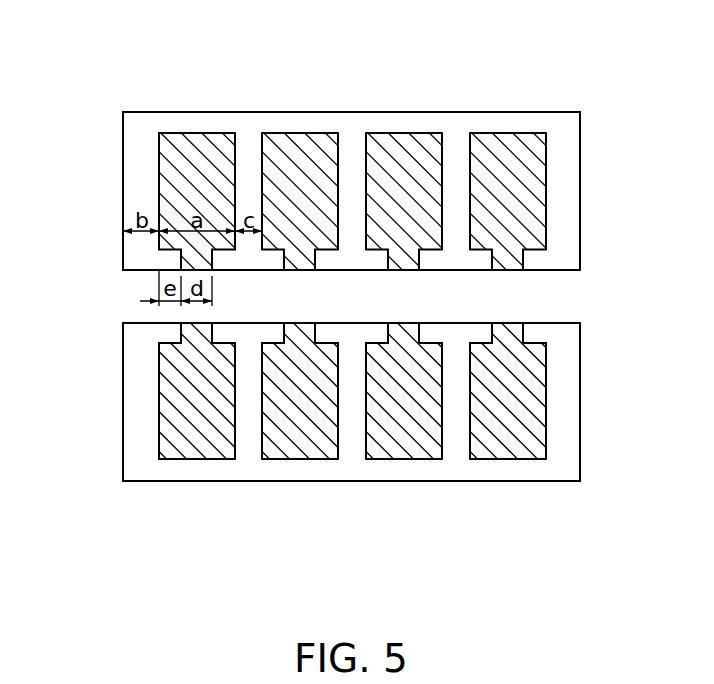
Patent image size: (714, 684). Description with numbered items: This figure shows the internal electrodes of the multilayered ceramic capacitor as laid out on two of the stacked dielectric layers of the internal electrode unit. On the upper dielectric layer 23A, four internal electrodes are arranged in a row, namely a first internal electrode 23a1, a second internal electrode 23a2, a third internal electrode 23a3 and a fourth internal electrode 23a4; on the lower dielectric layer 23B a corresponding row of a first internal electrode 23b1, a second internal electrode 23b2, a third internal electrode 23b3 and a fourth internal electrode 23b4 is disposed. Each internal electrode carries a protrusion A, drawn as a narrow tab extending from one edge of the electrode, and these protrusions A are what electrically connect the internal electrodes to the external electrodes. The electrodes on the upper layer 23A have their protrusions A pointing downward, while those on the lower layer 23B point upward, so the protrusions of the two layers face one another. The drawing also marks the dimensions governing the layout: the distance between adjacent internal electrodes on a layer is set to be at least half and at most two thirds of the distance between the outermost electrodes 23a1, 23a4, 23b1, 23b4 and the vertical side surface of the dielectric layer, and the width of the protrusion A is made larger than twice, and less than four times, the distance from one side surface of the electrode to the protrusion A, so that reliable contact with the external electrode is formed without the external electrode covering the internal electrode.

The dielectric layer 23A is at (137, 190).
The dielectric layer 23B is at (137, 402).
The first internal electrode 23a1 is at (193, 150).
The second internal electrode 23a2 is at (297, 150).
The third internal electrode 23a3 is at (401, 150).
The fourth internal electrode 23a4 is at (505, 150).
The first internal electrode 23b1 is at (193, 435).
The second internal electrode 23b2 is at (297, 435).
The third internal electrode 23b3 is at (401, 435).
The fourth internal electrode 23b4 is at (505, 435).
The protrusion A is at (500, 340).